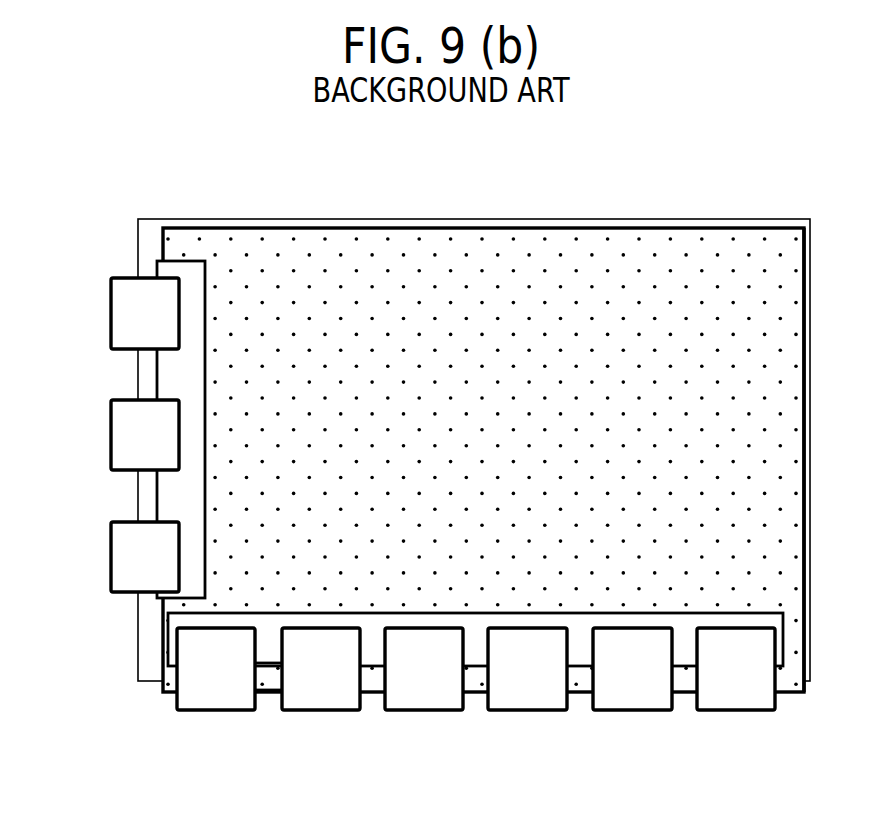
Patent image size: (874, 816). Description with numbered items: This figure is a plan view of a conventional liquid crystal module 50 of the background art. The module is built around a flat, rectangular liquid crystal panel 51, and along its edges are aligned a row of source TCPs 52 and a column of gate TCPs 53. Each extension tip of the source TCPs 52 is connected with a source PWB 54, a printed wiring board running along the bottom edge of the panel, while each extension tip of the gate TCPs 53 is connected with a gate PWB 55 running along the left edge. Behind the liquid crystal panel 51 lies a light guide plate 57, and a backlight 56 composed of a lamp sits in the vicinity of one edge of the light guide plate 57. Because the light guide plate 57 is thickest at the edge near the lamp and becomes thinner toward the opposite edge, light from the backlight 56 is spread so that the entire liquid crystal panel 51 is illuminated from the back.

The liquid crystal module 50 is at (704, 217).
The liquid crystal panel 51 is at (150, 241).
The source TCPs 52 is at (735, 692).
The gate TCPs 53 is at (130, 336).
The source PWB 54 is at (477, 628).
The gate PWB 55 is at (177, 495).
The backlight 56 is at (268, 678).
The light guide plate 57 is at (779, 545).